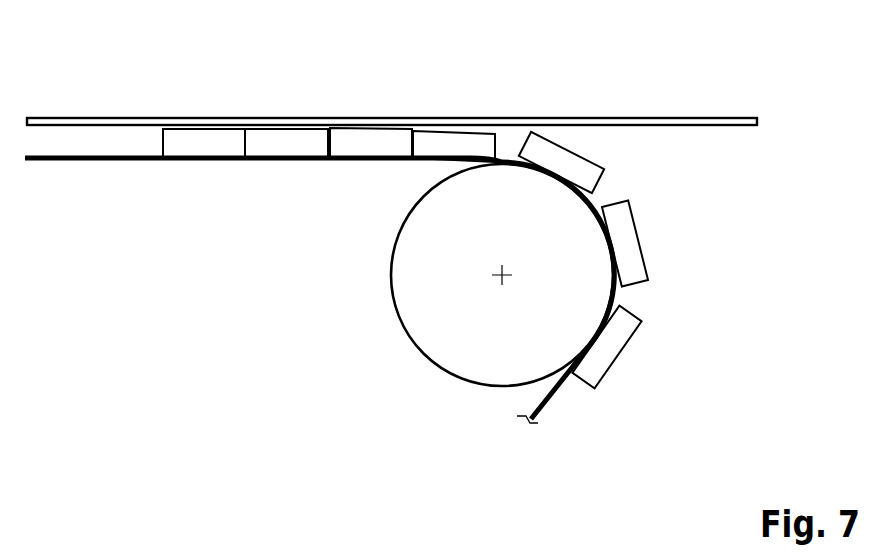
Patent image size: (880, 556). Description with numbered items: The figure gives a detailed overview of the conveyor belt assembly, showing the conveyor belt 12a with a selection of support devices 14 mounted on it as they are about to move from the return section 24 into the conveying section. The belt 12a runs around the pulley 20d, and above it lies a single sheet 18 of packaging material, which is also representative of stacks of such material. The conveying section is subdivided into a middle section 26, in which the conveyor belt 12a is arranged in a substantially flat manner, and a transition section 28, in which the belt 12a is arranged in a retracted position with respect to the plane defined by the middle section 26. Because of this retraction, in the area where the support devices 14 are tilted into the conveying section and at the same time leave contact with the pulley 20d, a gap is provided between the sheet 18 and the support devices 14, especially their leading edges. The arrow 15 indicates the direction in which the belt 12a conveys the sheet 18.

The conveyor belt 12a is at (83, 162).
The support devices 14 is at (290, 145).
The conveying direction 15 is at (328, 78).
The sheet of packaging material 18 is at (722, 114).
The pulley 20d is at (392, 313).
The return section 24 is at (563, 436).
The middle section 26 is at (205, 94).
The transition section 28 is at (584, 95).